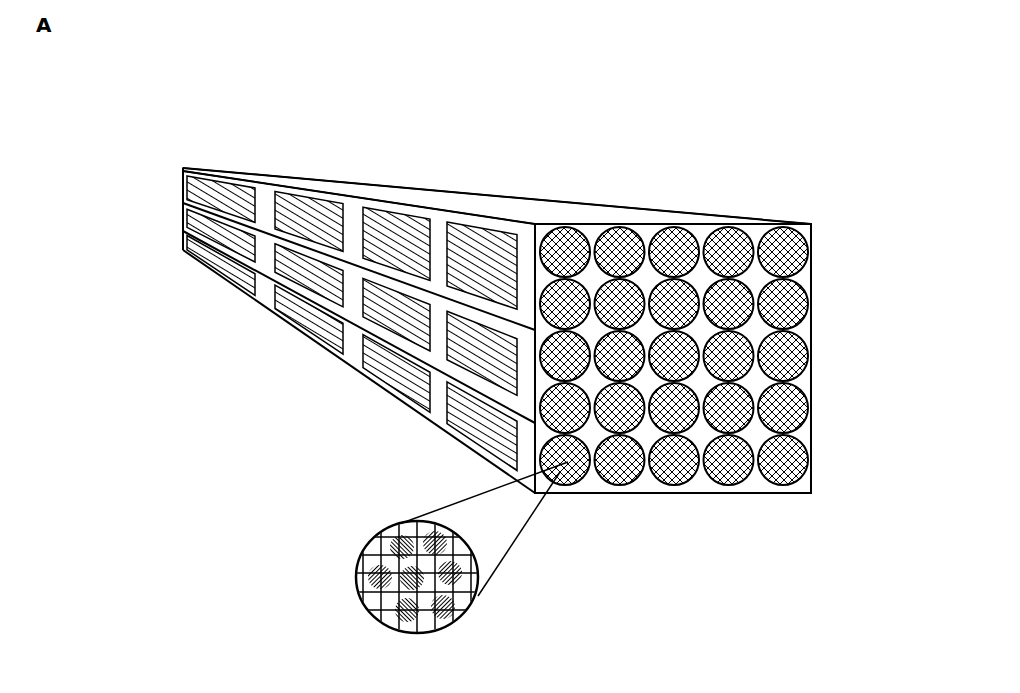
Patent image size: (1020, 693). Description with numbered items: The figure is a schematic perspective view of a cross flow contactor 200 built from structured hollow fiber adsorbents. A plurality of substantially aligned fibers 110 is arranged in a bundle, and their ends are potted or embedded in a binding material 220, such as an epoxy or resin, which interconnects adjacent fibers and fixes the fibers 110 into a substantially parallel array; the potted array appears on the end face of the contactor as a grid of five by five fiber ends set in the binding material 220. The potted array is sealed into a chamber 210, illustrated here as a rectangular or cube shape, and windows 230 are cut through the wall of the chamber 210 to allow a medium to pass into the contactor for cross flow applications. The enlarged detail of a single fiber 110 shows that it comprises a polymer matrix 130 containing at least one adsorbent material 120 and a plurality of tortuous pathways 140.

The cross flow contactor 200 is at (178, 127).
The chamber 210 is at (563, 210).
The binding material 220 is at (652, 483).
The fiber adsorbent 110 is at (807, 223).
The window 230 is at (293, 228).
The adsorbent material 120 is at (405, 615).
The polymer matrix 130 is at (377, 560).
The tortuous pathways 140 is at (390, 597).